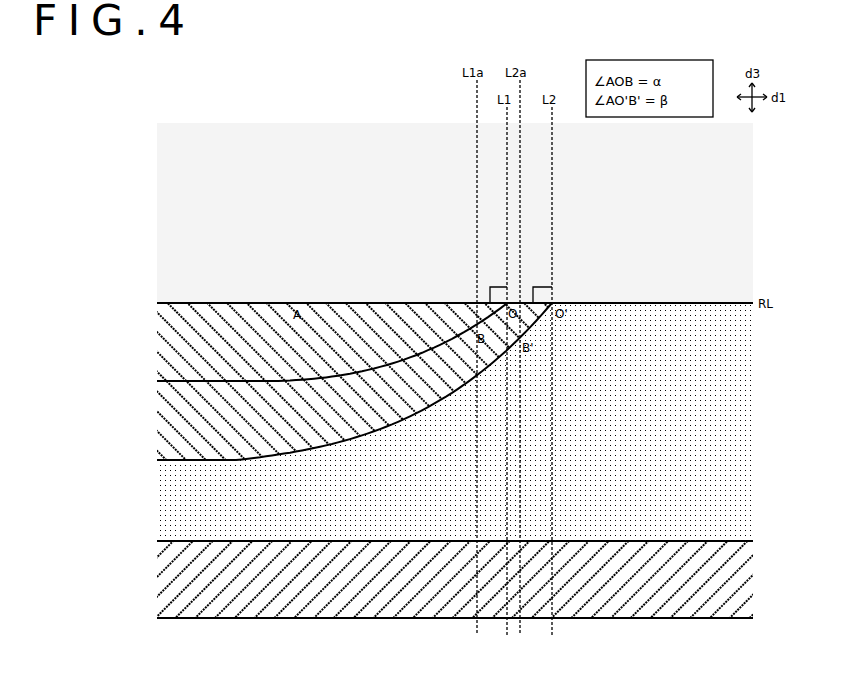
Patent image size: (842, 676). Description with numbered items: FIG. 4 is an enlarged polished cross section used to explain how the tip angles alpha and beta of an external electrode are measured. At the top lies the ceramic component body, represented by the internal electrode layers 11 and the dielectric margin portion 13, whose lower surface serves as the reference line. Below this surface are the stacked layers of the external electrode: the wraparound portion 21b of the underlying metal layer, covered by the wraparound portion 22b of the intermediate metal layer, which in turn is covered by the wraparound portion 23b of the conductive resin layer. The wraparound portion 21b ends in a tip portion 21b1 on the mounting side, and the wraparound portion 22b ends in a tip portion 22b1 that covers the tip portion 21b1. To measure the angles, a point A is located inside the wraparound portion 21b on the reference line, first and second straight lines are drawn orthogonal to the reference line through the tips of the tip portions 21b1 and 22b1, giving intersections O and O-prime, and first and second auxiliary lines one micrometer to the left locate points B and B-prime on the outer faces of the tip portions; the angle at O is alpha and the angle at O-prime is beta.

The internal electrode layer 11 is at (402, 213).
The dielectric margin portion 13 is at (166, 207).
The wraparound portion of the underlying metal layer 21b is at (168, 346).
The wraparound portion of the intermediate metal layer 22b is at (168, 421).
The wraparound portion of the conductive resin layer 23b is at (168, 505).
The tip portion of the wraparound portion of the underlying metal layer 21b1 is at (488, 308).
The tip portion of the wraparound portion of the intermediate metal layer 22b1 is at (540, 318).